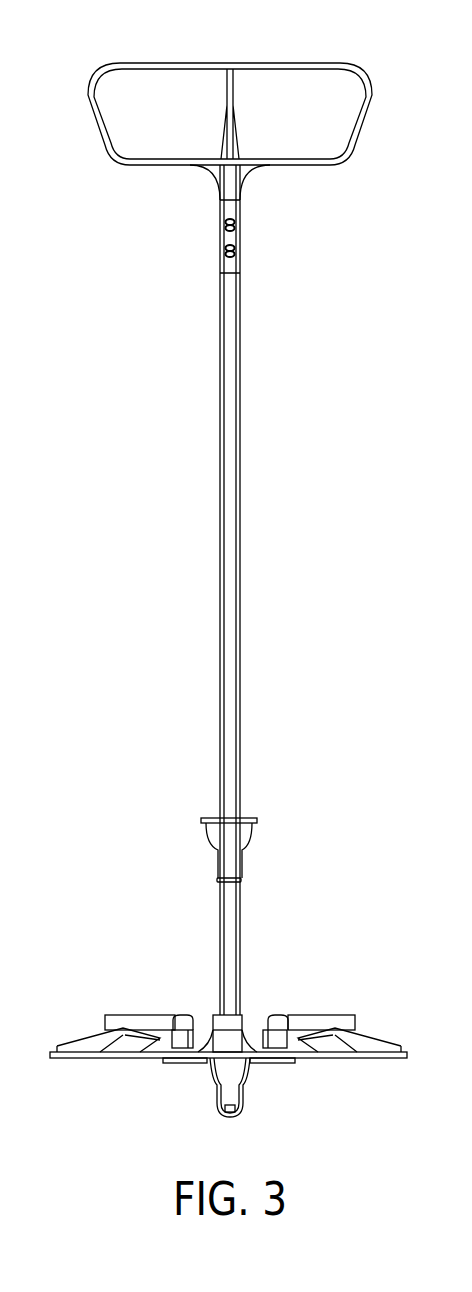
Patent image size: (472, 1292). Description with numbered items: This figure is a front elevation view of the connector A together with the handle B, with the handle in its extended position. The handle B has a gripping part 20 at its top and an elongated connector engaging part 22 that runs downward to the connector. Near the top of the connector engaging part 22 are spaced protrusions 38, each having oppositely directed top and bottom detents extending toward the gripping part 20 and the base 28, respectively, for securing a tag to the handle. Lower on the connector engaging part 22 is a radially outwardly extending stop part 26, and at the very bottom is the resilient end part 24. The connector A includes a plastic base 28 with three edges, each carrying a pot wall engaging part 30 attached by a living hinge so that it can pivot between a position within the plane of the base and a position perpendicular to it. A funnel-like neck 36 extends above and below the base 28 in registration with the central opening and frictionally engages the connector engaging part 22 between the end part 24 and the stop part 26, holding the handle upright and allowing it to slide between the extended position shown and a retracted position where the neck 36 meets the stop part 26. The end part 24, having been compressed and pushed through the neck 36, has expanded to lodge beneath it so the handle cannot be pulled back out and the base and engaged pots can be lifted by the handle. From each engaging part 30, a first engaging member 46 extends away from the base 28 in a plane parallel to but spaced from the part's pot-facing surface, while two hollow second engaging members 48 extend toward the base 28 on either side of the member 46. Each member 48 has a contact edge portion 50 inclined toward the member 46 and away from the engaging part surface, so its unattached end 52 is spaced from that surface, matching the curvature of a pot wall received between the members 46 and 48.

The gripping part 20 is at (198, 62).
The connector engaging part 22 is at (221, 508).
The end part 24 is at (230, 1118).
The stop part 26 is at (247, 816).
The base 28 is at (260, 1062).
The pot wall engaging part 30 is at (200, 1060).
The funnel-like neck 36 is at (250, 1035).
The protrusions 38 is at (224, 250).
The first engaging member 46 is at (157, 1023).
The second engaging member 48 is at (93, 1045).
The contact edge portion 50 is at (194, 1035).
The unattached end 52 is at (113, 1055).
The connector A is at (76, 1065).
The handle B is at (218, 592).